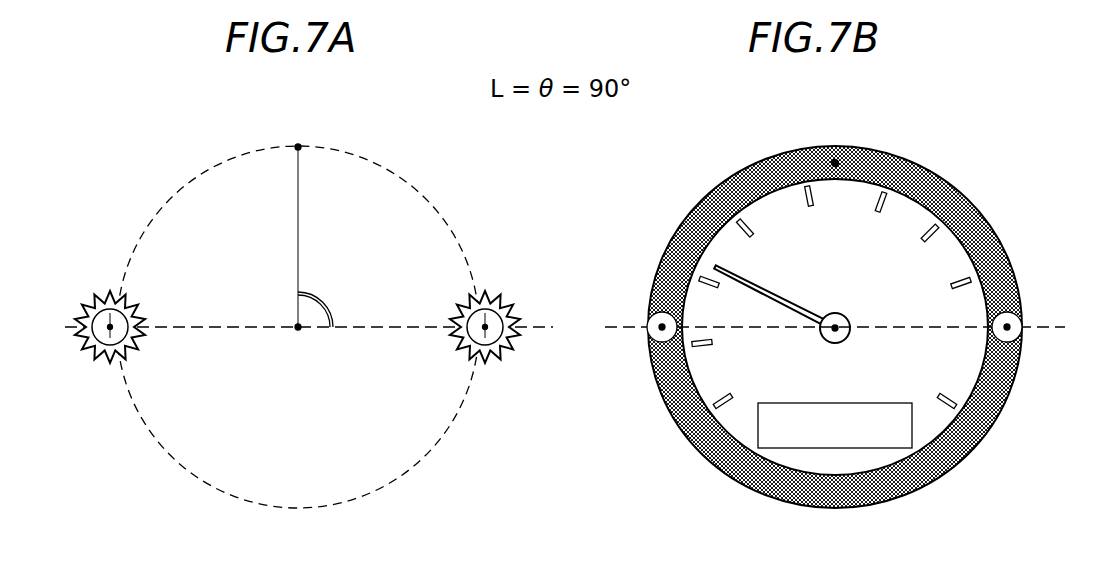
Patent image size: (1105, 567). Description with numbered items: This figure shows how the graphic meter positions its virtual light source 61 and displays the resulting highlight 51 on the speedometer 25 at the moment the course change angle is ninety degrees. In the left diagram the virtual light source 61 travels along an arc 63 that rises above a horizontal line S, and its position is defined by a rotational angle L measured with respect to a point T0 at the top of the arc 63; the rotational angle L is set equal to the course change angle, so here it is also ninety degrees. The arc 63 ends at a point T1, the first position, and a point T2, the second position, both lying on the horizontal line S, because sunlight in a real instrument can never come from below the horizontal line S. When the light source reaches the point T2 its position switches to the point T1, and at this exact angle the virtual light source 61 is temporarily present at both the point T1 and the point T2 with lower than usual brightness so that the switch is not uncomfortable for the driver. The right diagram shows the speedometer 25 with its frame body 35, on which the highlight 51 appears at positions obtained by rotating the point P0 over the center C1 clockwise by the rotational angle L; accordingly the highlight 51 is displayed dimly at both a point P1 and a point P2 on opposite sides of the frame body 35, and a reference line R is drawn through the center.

In FIG. 7A, the virtual light source 61 is at (95, 302).
In FIG. 7A, the arc 63 is at (416, 180).
In FIG. 7A, the point T0 is at (300, 142).
In FIG. 7A, the point T1 is at (112, 340).
In FIG. 7A, the point T2 is at (487, 340).
In FIG. 7A, the horizontal line S is at (537, 330).
In FIG. 7A, the rotational angle L is at (317, 304).
In FIG. 7B, the speedometer 25 is at (775, 153).
In FIG. 7B, the frame body 35 is at (948, 190).
In FIG. 7B, the point P0 is at (838, 161).
In FIG. 7B, the point P1 is at (650, 313).
In FIG. 7B, the point P2 is at (1020, 313).
In FIG. 7B, the highlight 51 is at (647, 350).
In FIG. 7B, the center C1 is at (828, 342).
In FIG. 7B, the reference line R is at (1045, 330).